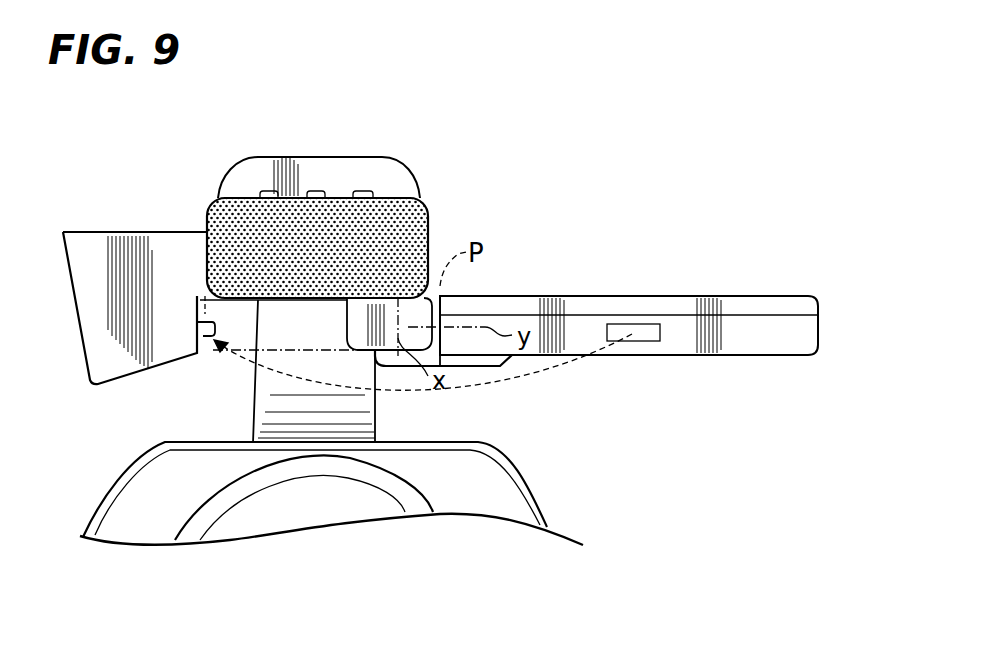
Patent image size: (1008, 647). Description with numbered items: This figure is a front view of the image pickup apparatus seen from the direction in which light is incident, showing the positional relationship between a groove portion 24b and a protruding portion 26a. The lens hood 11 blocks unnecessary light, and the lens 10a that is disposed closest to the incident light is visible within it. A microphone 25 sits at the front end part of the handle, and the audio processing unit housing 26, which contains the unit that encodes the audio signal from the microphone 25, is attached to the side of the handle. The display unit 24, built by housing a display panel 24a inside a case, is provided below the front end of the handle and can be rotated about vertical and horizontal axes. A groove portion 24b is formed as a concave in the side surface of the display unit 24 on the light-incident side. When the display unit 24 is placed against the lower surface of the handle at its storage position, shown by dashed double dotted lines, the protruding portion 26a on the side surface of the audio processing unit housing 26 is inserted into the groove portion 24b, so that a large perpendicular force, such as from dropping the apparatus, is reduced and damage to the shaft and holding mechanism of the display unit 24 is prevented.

The lens 10a is at (363, 497).
The lens hood 11 is at (534, 490).
The display unit 24 is at (767, 356).
The display panel 24a is at (637, 296).
The groove portion 24b is at (648, 342).
The microphone 25 is at (414, 228).
The audio processing unit housing 26 is at (125, 232).
The protruding portion 26a is at (198, 354).